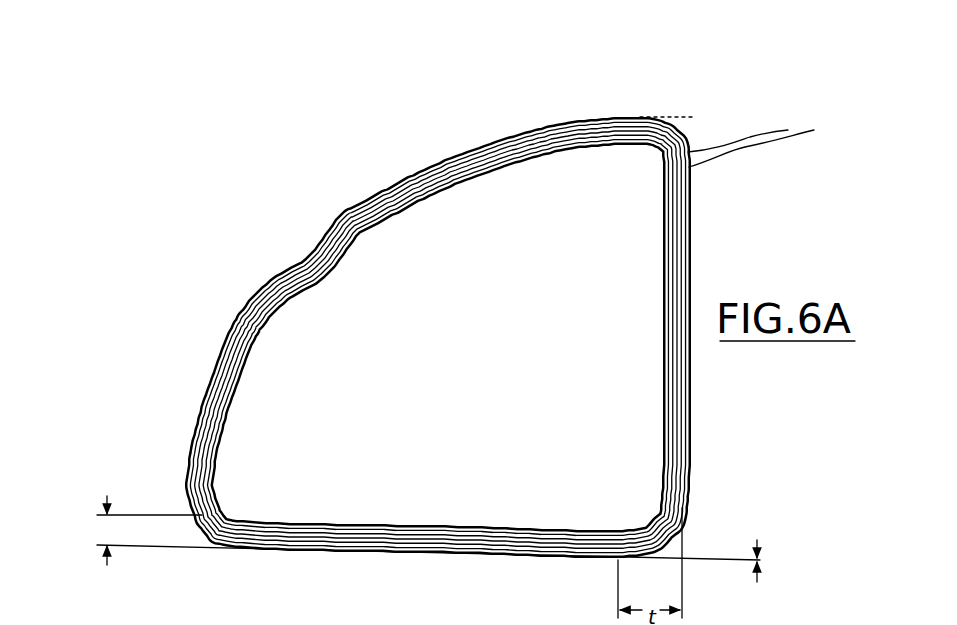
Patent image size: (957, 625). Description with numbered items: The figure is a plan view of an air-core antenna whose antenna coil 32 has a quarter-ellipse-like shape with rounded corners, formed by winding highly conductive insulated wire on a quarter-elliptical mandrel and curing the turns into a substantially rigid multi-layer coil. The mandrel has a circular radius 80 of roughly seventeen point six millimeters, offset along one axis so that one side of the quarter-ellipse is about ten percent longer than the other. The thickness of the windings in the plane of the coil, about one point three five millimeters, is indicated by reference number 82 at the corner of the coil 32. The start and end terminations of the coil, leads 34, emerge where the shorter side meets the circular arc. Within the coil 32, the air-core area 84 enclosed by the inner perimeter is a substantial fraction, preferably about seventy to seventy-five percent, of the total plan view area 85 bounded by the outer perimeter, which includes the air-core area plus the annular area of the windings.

The circular radius 80 is at (612, 556).
The coil thickness in the plane of the coil 82 is at (664, 123).
The leads 34 is at (793, 100).
The air-core area 84 is at (643, 160).
The total plan view area 85 is at (535, 377).
The antenna coil 32 is at (408, 538).